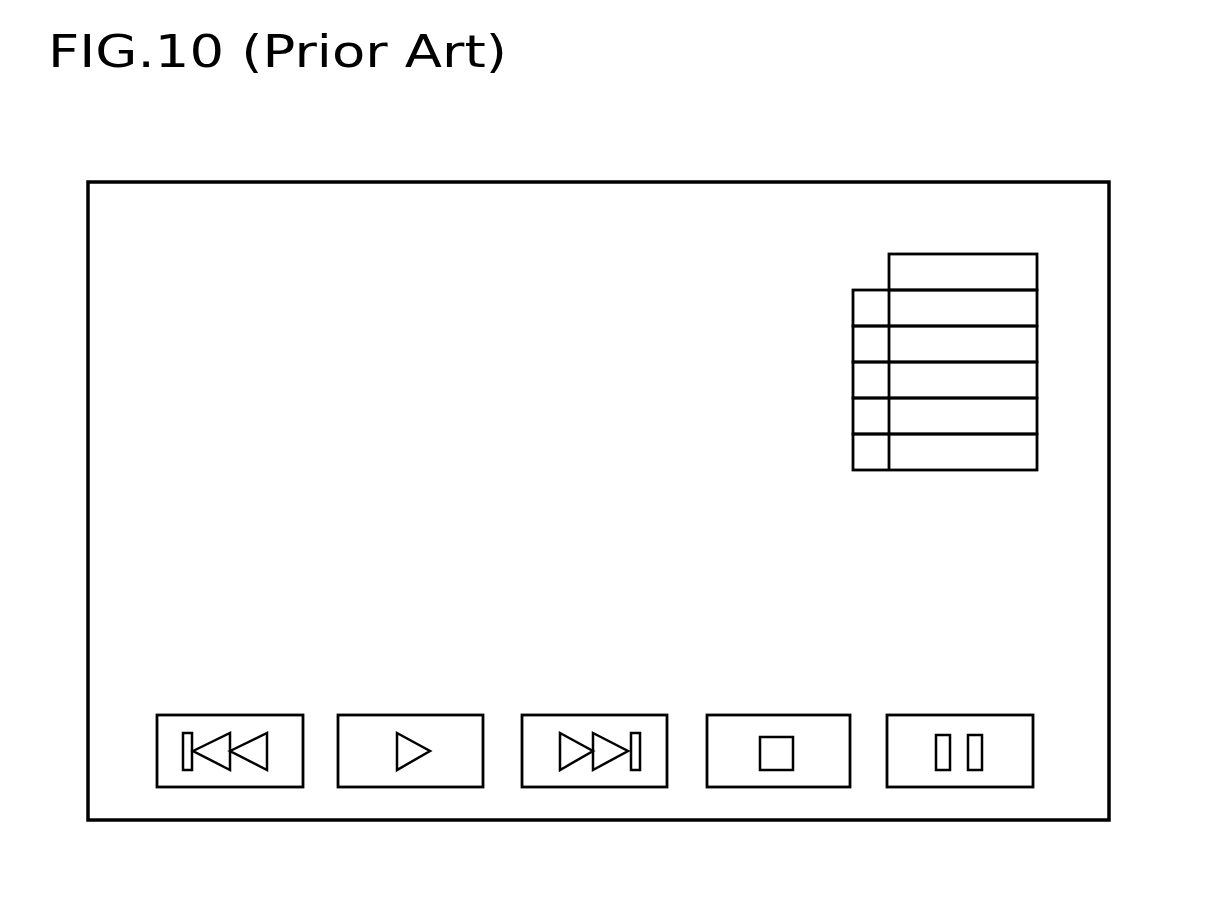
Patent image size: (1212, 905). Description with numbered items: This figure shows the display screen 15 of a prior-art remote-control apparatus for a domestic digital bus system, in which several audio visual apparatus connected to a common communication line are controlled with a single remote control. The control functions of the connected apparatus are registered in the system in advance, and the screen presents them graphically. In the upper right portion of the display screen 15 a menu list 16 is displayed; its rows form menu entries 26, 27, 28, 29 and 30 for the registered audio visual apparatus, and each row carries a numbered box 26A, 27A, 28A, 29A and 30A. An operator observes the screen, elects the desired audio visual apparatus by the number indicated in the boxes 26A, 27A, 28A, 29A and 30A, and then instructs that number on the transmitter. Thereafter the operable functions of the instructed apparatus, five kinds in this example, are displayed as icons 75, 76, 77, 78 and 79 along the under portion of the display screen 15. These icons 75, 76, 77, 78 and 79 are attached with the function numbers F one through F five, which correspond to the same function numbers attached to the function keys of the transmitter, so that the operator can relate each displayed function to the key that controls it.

The display screen 15 is at (1057, 182).
The menu list 16 is at (960, 258).
The LD menu item 26 is at (1037, 309).
The VTR menu item 27 is at (1037, 347).
The DAT menu item 28 is at (1037, 385).
The U/V tuner menu item 29 is at (1037, 418).
The BS tuner menu item 30 is at (1037, 450).
The box 26A is at (870, 290).
The box 27A is at (853, 335).
The box 28A is at (853, 380).
The box 29A is at (853, 403).
The box 30A is at (853, 452).
The icon 75 is at (217, 787).
The icon 76 is at (402, 787).
The icon 77 is at (588, 787).
The icon 78 is at (768, 787).
The icon 79 is at (947, 787).